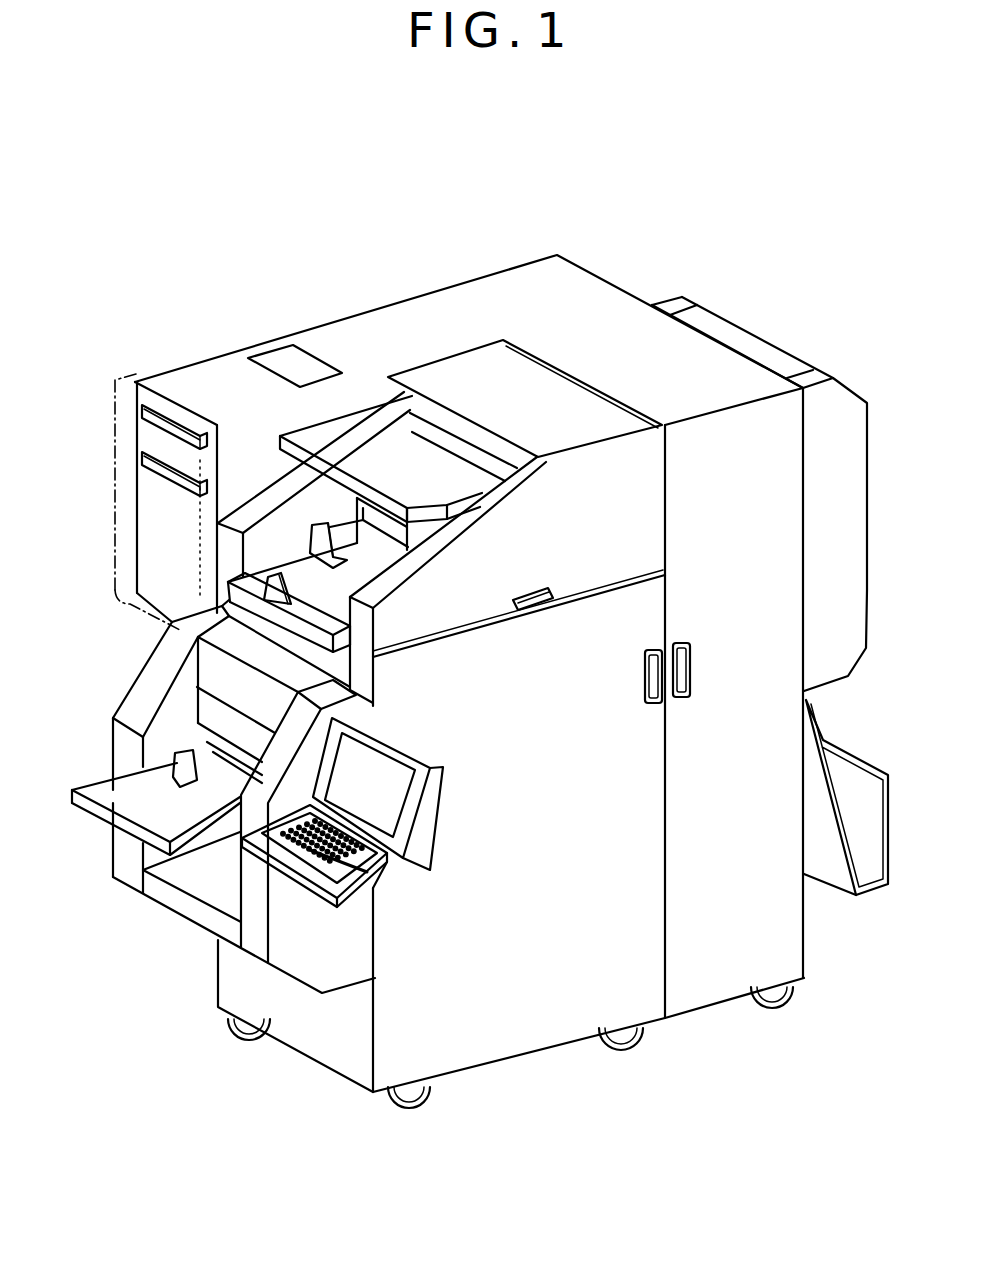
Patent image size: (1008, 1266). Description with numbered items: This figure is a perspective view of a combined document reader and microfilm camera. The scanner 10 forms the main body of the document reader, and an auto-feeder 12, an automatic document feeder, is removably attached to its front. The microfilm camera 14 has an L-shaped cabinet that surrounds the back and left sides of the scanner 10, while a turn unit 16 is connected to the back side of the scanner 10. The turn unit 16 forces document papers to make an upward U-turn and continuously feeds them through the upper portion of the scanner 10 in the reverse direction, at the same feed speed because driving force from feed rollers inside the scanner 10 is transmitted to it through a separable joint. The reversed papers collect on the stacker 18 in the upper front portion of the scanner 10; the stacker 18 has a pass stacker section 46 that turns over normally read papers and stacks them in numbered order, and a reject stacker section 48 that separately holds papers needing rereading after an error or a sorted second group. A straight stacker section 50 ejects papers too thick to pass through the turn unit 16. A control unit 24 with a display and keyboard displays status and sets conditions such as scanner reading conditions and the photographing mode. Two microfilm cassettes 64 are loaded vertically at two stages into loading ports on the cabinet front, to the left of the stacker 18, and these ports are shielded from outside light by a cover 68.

The scanner 10 is at (577, 1025).
The auto-feeder 12 is at (185, 735).
The microfilm camera 14 is at (568, 285).
The turn unit 16 is at (818, 405).
The stacker 18 is at (372, 455).
The control unit 24 is at (378, 870).
The pass stacker section 46 is at (292, 572).
The reject stacker section 48 is at (410, 460).
The straight stacker section 50 is at (865, 898).
The microfilm cassette 64 is at (133, 445).
The cover 68 is at (113, 514).